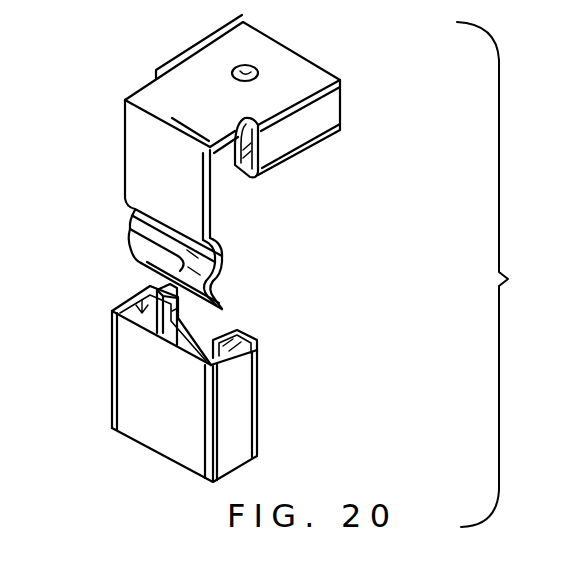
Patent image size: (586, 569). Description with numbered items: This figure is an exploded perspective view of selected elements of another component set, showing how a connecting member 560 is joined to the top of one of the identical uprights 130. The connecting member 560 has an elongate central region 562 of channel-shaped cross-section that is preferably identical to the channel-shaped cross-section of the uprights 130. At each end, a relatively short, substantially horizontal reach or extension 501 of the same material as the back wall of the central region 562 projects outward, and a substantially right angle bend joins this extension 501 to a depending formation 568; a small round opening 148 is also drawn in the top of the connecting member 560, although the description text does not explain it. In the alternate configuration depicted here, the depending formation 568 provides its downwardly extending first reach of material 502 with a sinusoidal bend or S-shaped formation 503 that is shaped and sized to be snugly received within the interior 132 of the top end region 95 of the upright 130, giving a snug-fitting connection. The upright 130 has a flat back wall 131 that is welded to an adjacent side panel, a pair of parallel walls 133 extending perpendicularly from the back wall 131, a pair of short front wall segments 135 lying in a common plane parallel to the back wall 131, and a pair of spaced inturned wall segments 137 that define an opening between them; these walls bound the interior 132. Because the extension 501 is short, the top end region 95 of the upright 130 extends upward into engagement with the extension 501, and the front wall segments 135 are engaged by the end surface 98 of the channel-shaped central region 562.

The connecting member 560 is at (306, 62).
The horizontal reach or extension 501 is at (152, 108).
The hole 148 is at (244, 66).
The elongate central region 562 is at (304, 146).
The end surface 98 is at (241, 178).
The depending formation 568 is at (137, 161).
The first reach of material 502 is at (129, 196).
The short front wall segment 135 is at (130, 233).
The sinusoidal bend or S-shaped formation 503 is at (224, 282).
The upright 130 is at (263, 408).
The top end region 95 is at (262, 381).
The parallel wall 133 is at (133, 309).
The flat back wall 131 is at (158, 464).
The interior 132 is at (137, 297).
The inturned wall segment 137 is at (217, 328).